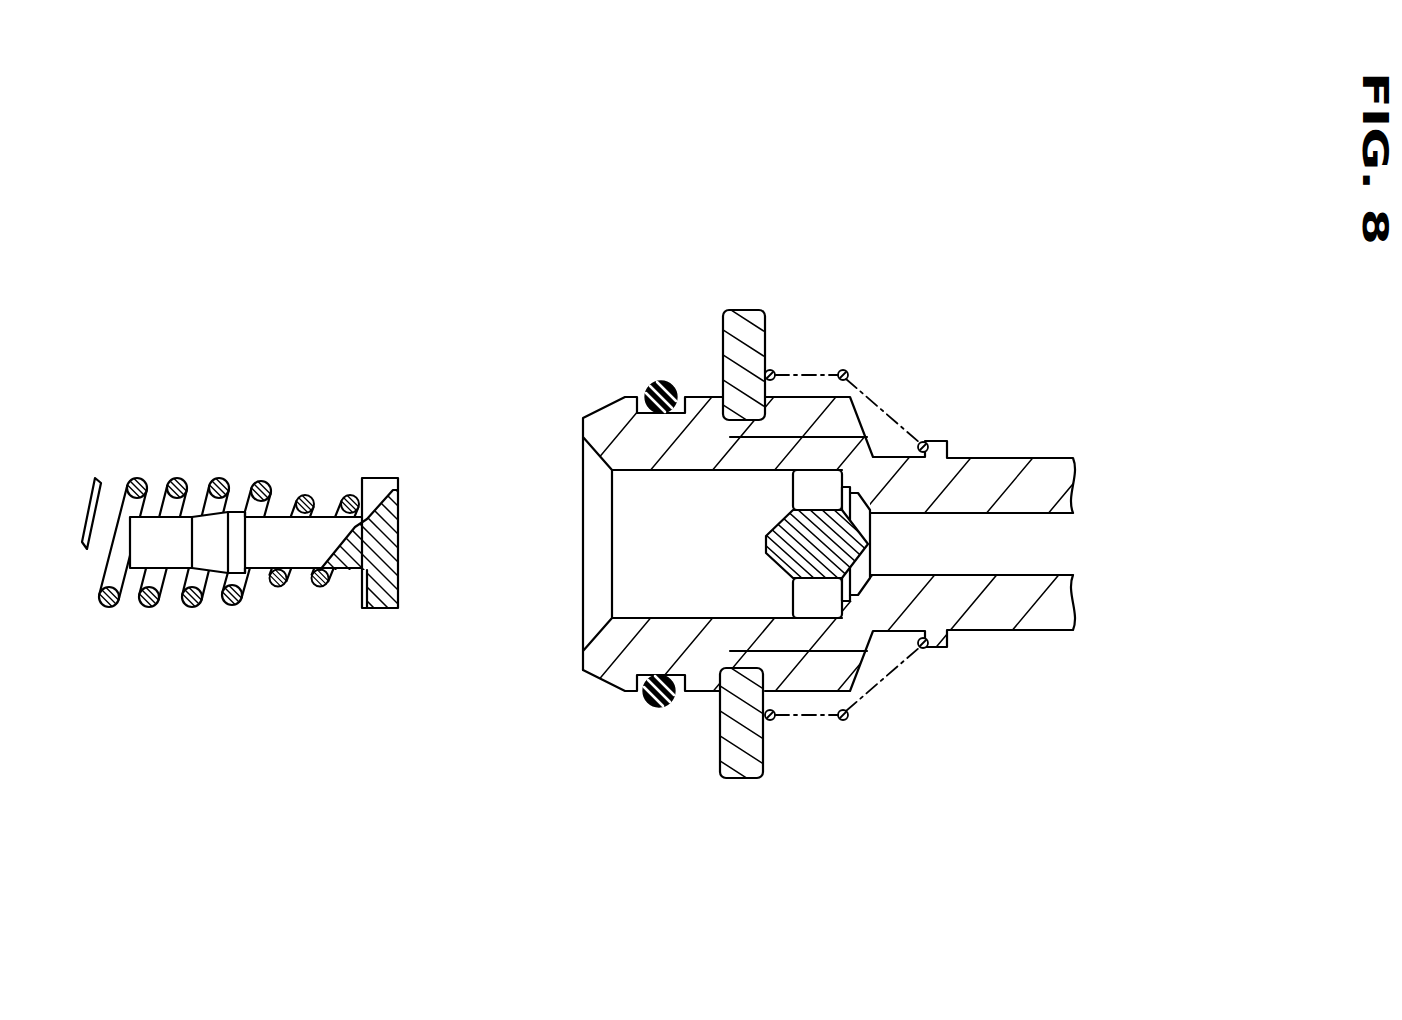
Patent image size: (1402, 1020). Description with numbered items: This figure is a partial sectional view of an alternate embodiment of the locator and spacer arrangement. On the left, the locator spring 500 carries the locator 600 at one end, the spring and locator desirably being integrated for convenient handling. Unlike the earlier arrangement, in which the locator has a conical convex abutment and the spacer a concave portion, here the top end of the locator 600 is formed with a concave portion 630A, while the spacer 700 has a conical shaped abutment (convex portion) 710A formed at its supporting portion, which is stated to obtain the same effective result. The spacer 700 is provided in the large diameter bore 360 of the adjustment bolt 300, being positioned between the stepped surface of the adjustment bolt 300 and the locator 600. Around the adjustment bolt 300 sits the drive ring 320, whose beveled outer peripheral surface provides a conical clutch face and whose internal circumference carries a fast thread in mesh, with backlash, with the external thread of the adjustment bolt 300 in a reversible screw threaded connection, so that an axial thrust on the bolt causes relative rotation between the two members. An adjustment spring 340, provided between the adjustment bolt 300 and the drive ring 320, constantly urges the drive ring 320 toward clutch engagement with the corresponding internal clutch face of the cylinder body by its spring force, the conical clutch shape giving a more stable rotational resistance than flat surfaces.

The adjustment bolt 300 is at (993, 420).
The drive ring 320 is at (732, 786).
The adjustment spring 340 is at (847, 718).
The large diameter bore 360 is at (652, 616).
The locator spring 500 is at (178, 477).
The locator 600 is at (328, 493).
The concave portion 630A is at (398, 552).
The spacer 700 is at (793, 488).
The conical shaped abutment (convex portion) 710A is at (766, 548).